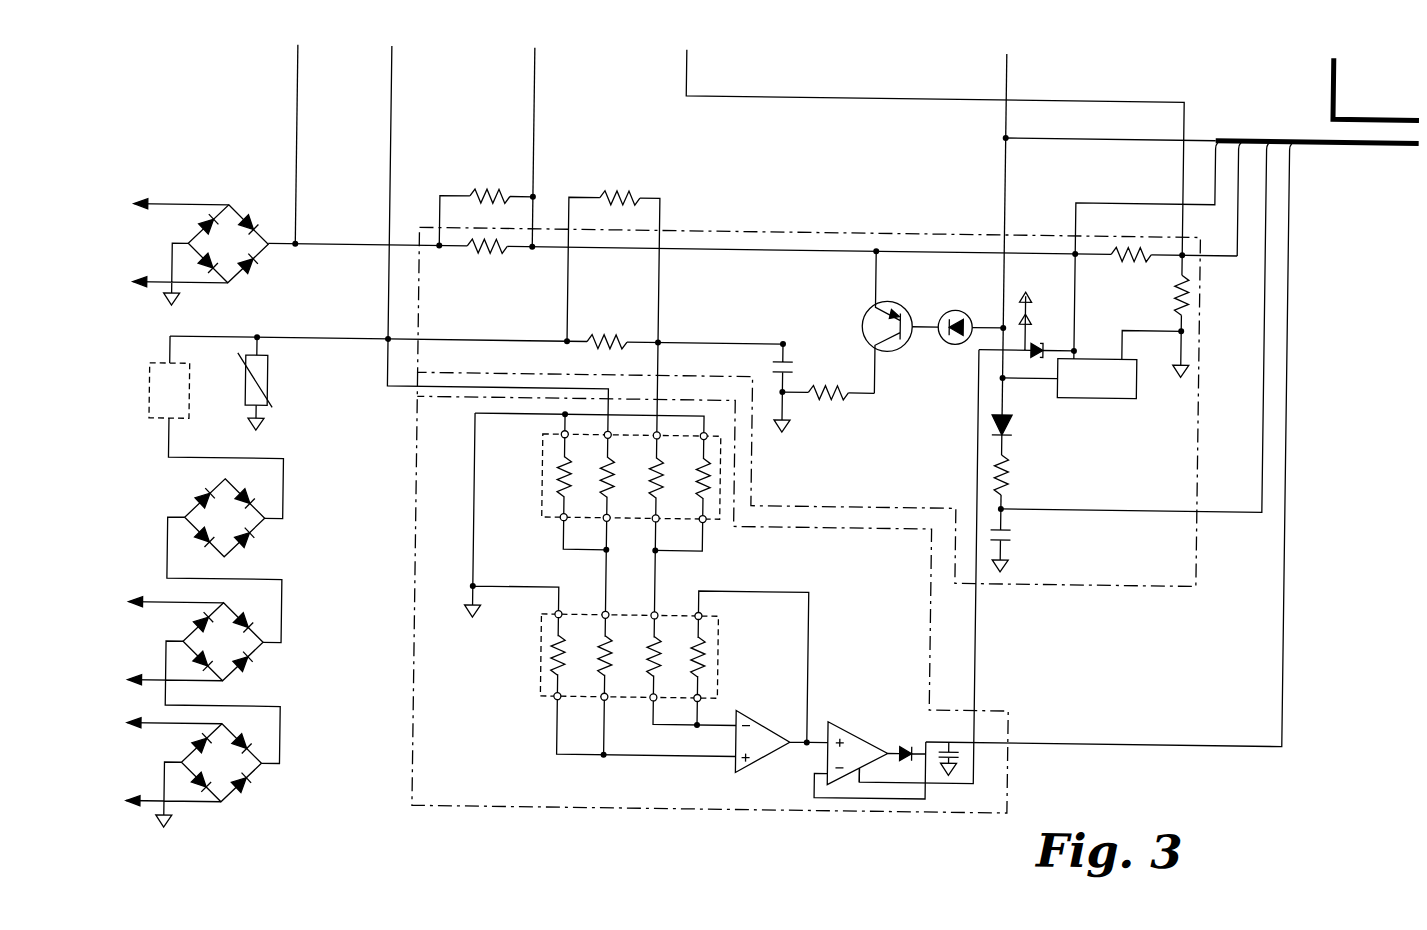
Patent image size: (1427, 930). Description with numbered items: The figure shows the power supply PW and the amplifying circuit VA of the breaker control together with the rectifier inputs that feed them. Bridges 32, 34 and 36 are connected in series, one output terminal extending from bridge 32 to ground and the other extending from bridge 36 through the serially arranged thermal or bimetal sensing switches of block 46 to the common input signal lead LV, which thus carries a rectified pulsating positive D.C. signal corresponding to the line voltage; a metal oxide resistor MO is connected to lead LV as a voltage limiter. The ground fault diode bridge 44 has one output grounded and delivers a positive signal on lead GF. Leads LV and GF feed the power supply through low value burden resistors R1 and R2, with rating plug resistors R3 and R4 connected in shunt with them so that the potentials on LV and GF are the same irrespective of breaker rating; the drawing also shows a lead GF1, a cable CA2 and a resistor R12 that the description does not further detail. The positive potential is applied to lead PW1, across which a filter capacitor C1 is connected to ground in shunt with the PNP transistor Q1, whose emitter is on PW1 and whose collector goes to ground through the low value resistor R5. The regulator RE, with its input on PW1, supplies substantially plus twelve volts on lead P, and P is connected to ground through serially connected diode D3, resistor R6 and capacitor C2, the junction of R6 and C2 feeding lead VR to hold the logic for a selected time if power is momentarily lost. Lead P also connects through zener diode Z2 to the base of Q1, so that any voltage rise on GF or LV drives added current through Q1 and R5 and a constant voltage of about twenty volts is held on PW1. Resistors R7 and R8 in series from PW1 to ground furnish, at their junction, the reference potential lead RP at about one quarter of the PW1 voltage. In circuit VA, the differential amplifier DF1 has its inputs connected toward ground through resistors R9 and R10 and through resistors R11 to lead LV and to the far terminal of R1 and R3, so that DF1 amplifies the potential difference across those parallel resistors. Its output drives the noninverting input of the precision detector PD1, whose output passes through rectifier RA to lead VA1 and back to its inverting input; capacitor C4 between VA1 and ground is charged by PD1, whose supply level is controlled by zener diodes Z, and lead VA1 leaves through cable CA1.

The signal lead GF is at (293, 89).
The common input signal lead LV is at (387, 88).
The grid frequency input line GF1 is at (530, 86).
The reference potential lead RP is at (682, 78).
The output lead P is at (1002, 78).
The cable CA1 is at (1330, 138).
The cable bus CA2 is at (1332, 78).
The lead PW1 is at (1132, 198).
The burden resistor R1 is at (624, 336).
The burden resistor R2 is at (462, 257).
The rating resistor R3 is at (624, 194).
The rating resistor R4 is at (494, 195).
The resistor R5 is at (842, 384).
The resistor R6 is at (1010, 472).
The resistor R7 is at (1135, 265).
The resistor R8 is at (1174, 294).
The resistor R9 is at (630, 666).
The resistor R10 is at (562, 496).
The resistor R11 is at (606, 498).
The resistor R12 is at (707, 660).
The filter capacitor C1 is at (772, 362).
The capacitor C2 is at (1012, 534).
The capacitor C4 is at (962, 746).
The diode D3 is at (1015, 421).
The PNP transistor Q1 is at (912, 308).
The zener diodes Z is at (1030, 332).
The zener diode Z2 is at (956, 310).
The power supply regulator RE is at (1091, 364).
The metal oxide resistor MO is at (270, 386).
The power supply PW is at (811, 449).
The amplifying circuit VA is at (803, 570).
The lead VR is at (1263, 462).
The lead VA1 is at (1286, 660).
The differential amplifier DF1 is at (784, 760).
The precision detector PD1 is at (842, 716).
The rectifier RA is at (893, 720).
The ground fault diode bridge 44 is at (200, 253).
The thermal or bimetal sensing switches 46 is at (216, 427).
The bridge 36 is at (224, 560).
The bridge 34 is at (203, 680).
The bridge 32 is at (194, 773).